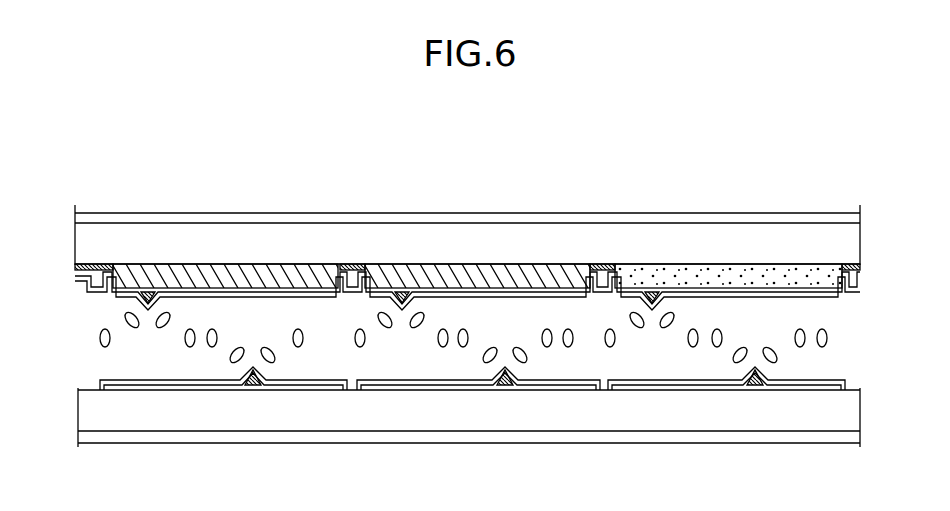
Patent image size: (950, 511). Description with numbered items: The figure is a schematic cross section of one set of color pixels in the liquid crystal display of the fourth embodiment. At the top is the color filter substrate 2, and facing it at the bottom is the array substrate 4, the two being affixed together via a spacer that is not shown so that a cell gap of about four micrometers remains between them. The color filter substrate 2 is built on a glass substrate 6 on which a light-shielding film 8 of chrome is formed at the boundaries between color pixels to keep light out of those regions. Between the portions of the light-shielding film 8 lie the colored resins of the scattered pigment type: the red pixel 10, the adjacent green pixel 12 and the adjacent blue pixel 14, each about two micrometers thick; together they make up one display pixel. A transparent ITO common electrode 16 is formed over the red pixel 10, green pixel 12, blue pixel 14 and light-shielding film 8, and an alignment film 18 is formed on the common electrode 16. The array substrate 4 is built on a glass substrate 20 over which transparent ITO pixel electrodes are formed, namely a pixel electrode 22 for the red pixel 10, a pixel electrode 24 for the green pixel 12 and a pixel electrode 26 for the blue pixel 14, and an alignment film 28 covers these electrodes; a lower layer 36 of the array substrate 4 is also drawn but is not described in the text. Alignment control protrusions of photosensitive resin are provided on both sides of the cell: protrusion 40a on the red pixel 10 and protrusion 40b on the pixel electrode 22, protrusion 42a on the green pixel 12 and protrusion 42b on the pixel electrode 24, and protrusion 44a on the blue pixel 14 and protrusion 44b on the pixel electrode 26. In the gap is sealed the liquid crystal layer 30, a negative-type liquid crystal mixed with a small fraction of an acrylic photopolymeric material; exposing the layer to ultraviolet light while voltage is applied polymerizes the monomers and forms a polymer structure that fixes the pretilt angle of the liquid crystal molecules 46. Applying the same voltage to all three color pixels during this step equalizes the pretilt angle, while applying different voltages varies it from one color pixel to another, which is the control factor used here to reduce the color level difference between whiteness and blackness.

The color filter substrate 2 is at (70, 238).
The array substrate 4 is at (70, 418).
The glass substrate 6 is at (848, 238).
The light-shielding film 8 is at (97, 264).
The red pixel 10 is at (258, 264).
The green pixel 12 is at (492, 264).
The blue pixel 14 is at (705, 264).
The common electrode 16 is at (752, 264).
The alignment film 18 is at (812, 300).
The glass substrate 20 is at (848, 418).
The pixel electrode 22 is at (183, 390).
The pixel electrode 24 is at (395, 390).
The pixel electrode 26 is at (650, 390).
The alignment film 28 is at (825, 388).
The liquid crystal layer 30 is at (82, 358).
The polarizer 36 is at (104, 432).
The alignment control protrusion 40a is at (146, 300).
The alignment control protrusion 40b is at (255, 380).
The alignment control protrusion 42a is at (400, 300).
The alignment control protrusion 42b is at (506, 378).
The alignment control protrusion 44a is at (648, 300).
The alignment control protrusion 44b is at (757, 380).
The liquid crystal molecules 46 is at (280, 366).